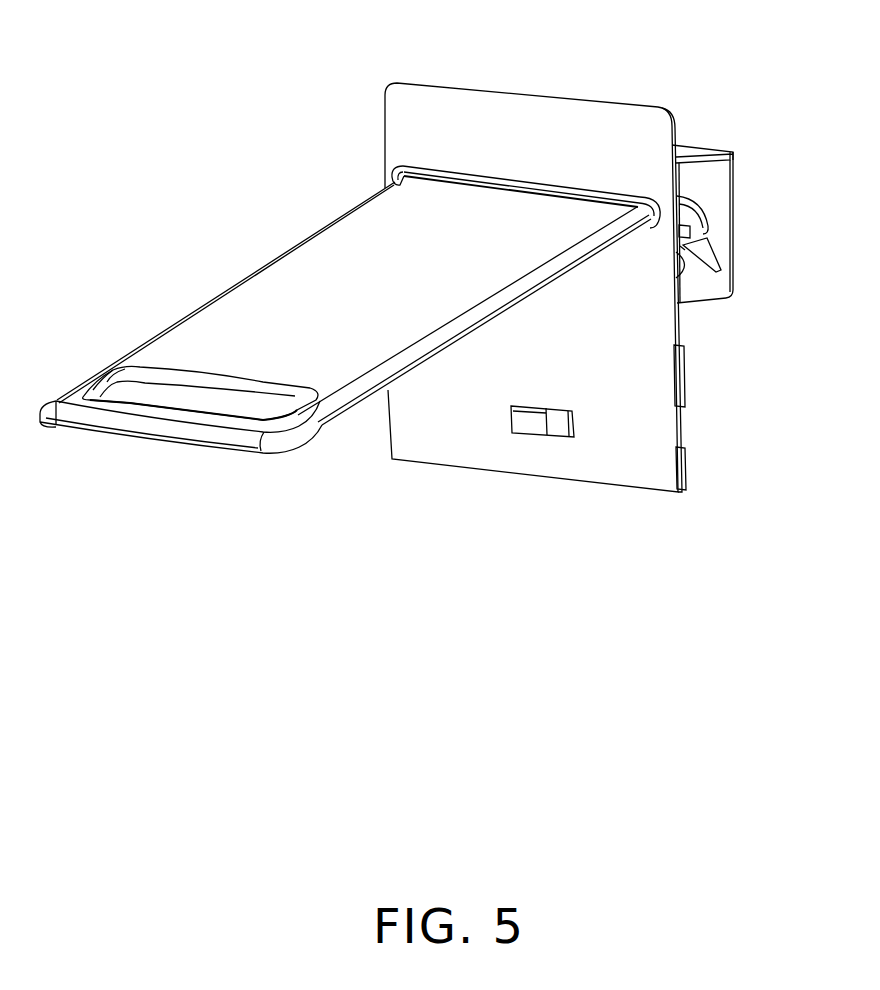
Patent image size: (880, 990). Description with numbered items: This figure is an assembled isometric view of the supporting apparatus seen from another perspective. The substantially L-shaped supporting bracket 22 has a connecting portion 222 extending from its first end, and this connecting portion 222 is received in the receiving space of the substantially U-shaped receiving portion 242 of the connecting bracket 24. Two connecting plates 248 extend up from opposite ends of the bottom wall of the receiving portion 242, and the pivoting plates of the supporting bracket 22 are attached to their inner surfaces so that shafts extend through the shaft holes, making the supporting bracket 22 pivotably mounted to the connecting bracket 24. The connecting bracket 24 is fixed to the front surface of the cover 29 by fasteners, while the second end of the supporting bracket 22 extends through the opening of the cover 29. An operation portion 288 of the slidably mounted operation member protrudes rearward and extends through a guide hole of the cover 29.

The supporting bracket 22 is at (295, 285).
The connecting portion 222 is at (712, 256).
The connecting bracket 24 is at (744, 226).
The receiving portion 242 is at (710, 190).
The connecting plate 248 is at (708, 287).
The operation portion 288 is at (543, 432).
The cover 29 is at (439, 102).